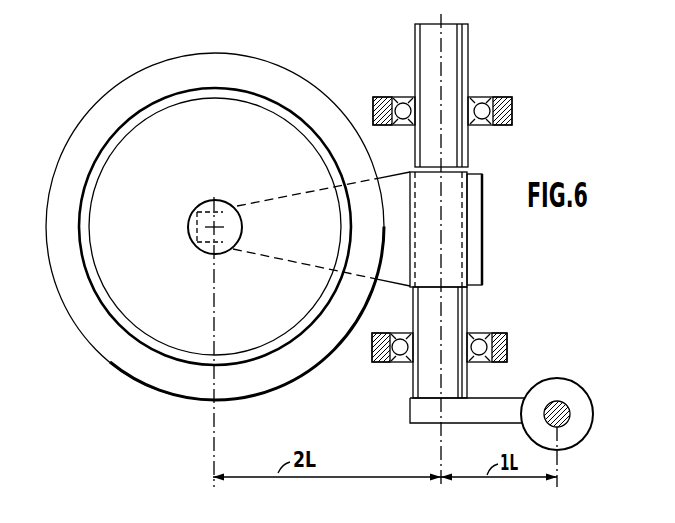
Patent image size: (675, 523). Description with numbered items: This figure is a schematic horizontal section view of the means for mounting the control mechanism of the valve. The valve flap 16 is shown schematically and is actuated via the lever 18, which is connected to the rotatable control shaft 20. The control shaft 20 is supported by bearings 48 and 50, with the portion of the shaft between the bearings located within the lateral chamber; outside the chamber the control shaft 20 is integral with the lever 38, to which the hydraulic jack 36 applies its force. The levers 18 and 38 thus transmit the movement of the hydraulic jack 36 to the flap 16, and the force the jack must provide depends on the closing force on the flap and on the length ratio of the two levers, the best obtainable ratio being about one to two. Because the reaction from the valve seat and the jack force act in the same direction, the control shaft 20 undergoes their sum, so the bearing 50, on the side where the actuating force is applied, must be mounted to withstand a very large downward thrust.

The valve flap 16 is at (84, 137).
The lever 18 is at (397, 187).
The rotatable control shaft 20 is at (447, 72).
The bearing 48 is at (494, 124).
The bearing 50 is at (476, 334).
The hydraulic jack 36 is at (577, 398).
The lever 38 is at (487, 408).